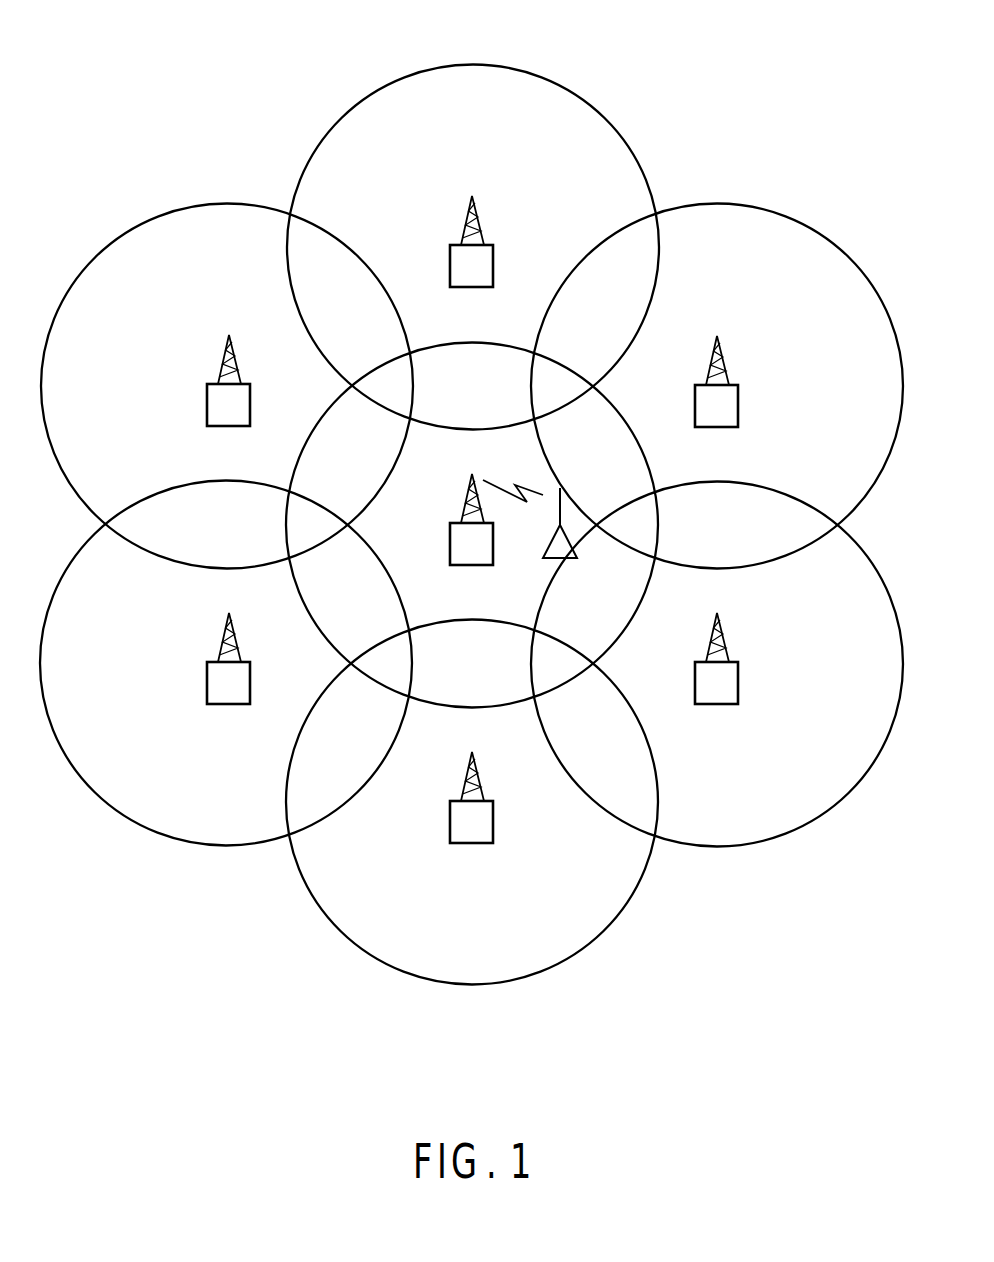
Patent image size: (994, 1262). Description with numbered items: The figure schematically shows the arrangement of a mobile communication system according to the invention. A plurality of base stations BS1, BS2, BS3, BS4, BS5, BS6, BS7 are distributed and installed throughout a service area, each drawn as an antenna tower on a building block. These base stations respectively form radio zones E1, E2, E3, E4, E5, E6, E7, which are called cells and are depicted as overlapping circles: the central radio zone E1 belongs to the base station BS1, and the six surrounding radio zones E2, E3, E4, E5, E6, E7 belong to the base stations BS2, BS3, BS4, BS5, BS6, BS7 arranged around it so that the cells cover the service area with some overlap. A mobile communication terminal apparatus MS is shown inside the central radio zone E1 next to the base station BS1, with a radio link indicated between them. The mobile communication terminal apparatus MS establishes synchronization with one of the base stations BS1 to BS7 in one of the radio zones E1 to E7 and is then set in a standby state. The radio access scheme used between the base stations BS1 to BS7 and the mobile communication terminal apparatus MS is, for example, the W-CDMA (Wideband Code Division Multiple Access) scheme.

The radio zone E1 is at (323, 603).
The radio zone E2 is at (477, 78).
The radio zone E3 is at (103, 281).
The radio zone E4 is at (132, 800).
The radio zone E5 is at (471, 970).
The radio zone E6 is at (812, 807).
The radio zone E7 is at (852, 275).
The base station BS1 is at (471, 540).
The base station BS2 is at (471, 262).
The base station BS3 is at (228, 401).
The base station BS4 is at (228, 679).
The base station BS5 is at (471, 818).
The base station BS6 is at (716, 679).
The base station BS7 is at (716, 402).
The mobile communication terminal apparatus MS is at (566, 542).